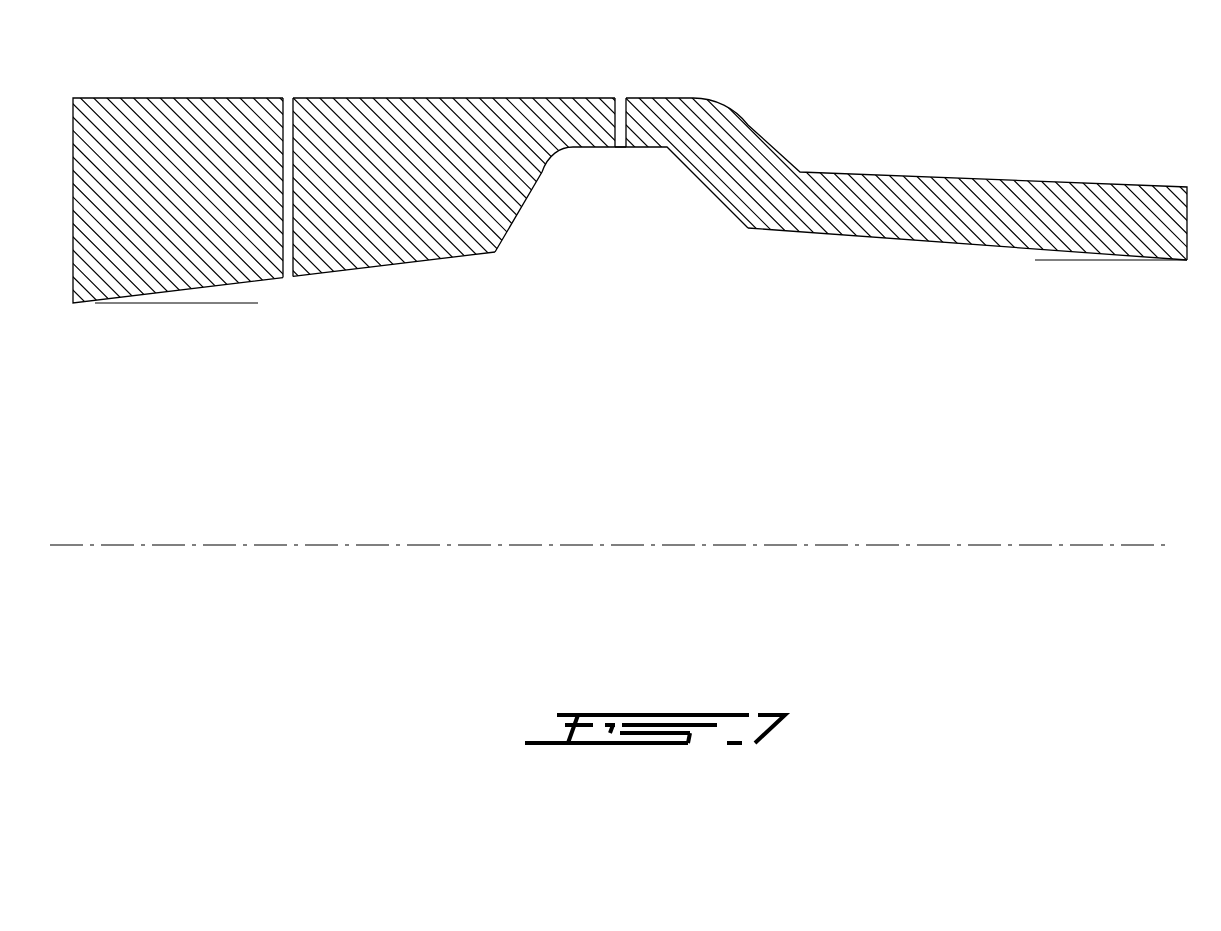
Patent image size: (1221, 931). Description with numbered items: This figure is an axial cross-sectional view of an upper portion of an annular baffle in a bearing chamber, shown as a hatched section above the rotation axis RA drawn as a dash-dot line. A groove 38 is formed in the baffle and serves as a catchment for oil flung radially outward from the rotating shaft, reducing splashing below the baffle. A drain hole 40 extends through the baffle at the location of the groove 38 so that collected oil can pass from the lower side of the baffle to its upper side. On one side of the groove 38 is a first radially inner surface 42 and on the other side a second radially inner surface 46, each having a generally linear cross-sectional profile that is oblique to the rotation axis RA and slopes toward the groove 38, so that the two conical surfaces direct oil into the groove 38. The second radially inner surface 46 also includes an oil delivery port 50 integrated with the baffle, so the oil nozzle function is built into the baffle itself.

The groove 38 is at (612, 192).
The drain hole 40 is at (620, 100).
The first radially inner annular surface 42 is at (872, 237).
The second radially inner annular surface 46 is at (400, 263).
The oil delivery port 50 is at (287, 278).
The rotation axis RA is at (968, 546).